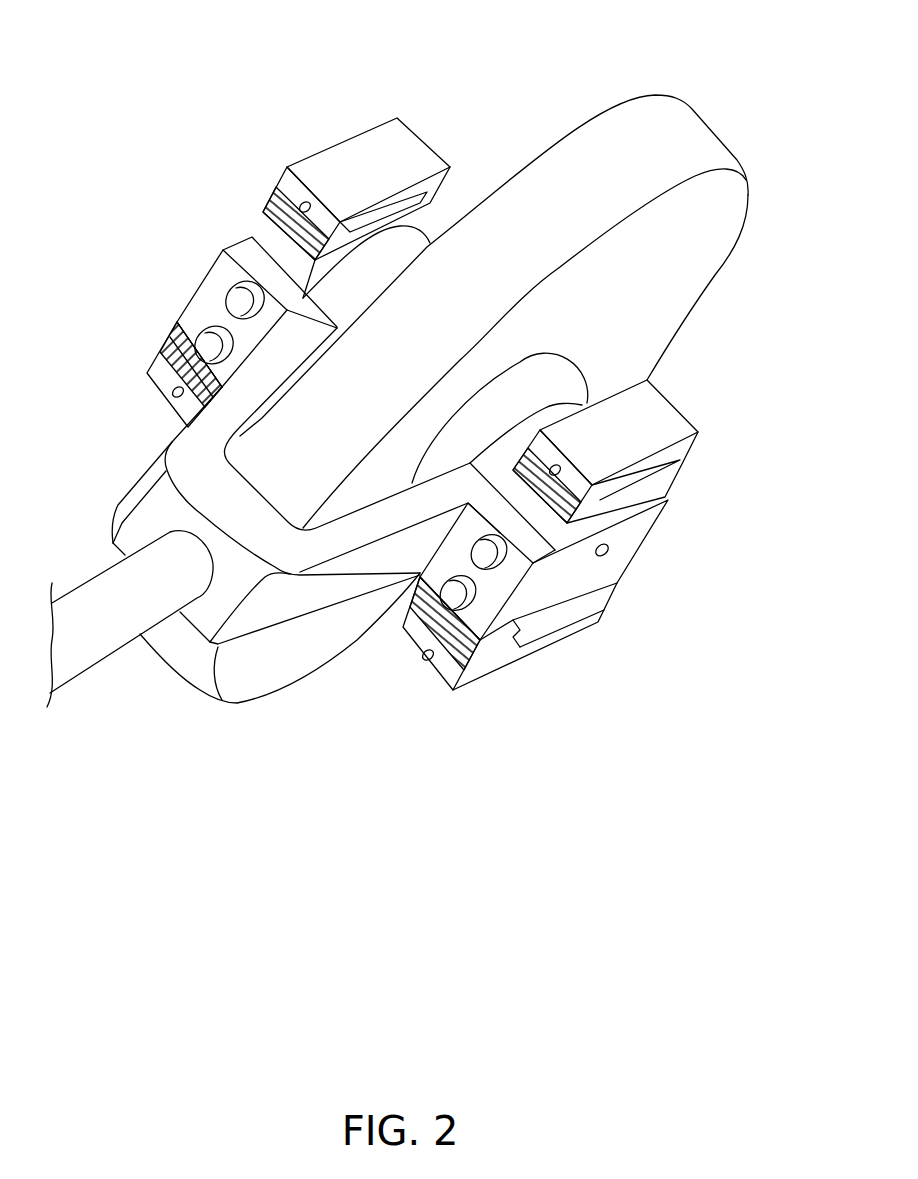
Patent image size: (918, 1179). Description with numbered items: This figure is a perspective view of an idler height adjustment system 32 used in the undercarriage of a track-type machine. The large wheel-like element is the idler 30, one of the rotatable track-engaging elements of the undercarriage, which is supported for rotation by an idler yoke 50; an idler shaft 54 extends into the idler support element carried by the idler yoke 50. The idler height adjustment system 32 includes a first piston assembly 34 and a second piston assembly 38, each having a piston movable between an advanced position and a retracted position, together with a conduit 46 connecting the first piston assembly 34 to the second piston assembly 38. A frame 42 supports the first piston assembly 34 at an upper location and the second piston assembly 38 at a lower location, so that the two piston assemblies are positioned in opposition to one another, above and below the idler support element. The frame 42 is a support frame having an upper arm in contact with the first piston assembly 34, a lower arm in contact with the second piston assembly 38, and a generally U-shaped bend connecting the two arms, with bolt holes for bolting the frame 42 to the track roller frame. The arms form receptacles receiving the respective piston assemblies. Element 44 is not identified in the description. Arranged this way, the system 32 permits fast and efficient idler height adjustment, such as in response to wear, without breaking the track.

The idler 30 is at (688, 118).
The idler height adjustment system 32 is at (436, 127).
The first piston assembly 34 is at (682, 464).
The second piston assembly 38 is at (575, 616).
The frame 42 is at (569, 530).
The mounting block 44 is at (564, 573).
The conduit 46 is at (560, 466).
The idler yoke 50 is at (355, 592).
The idler shaft 54 is at (610, 549).